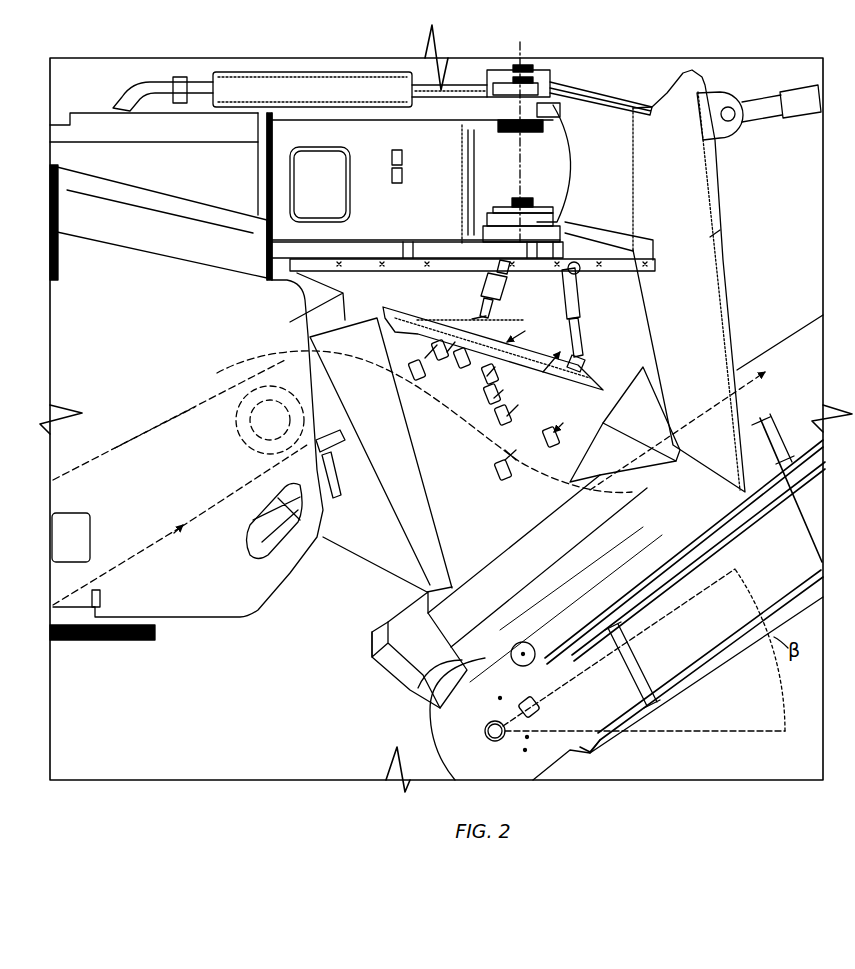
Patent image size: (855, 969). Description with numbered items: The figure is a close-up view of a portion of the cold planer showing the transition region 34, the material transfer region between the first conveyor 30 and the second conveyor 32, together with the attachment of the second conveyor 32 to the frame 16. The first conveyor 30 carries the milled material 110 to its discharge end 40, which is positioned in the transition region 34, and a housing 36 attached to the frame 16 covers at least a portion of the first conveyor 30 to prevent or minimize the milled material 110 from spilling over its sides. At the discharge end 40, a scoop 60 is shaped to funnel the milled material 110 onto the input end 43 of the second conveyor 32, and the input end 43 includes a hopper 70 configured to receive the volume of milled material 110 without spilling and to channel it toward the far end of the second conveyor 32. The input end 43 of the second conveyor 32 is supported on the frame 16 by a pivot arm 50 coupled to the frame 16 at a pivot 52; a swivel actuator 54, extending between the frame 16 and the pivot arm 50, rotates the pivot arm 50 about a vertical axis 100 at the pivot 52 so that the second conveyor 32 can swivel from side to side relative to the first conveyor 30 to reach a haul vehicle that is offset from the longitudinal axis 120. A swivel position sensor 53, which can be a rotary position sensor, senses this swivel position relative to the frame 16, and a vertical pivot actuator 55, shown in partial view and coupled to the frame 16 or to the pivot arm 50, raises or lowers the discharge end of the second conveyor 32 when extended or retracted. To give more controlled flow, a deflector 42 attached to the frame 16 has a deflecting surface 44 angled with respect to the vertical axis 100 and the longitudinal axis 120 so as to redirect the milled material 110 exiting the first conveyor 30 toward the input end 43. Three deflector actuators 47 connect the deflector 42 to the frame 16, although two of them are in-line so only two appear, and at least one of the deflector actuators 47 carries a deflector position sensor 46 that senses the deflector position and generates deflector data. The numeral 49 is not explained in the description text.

The frame 16 is at (198, 183).
The first conveyor 30 is at (183, 530).
The second conveyor 32 is at (797, 322).
The transition region 34 is at (450, 456).
The housing 36 is at (188, 346).
The discharge end 40 is at (312, 456).
The deflector 42 is at (560, 355).
The input end 43 is at (378, 672).
The deflecting surface 44 is at (543, 372).
The deflector position sensor 46 is at (572, 292).
The deflector actuators 47 is at (486, 288).
The rotor axis line 49 is at (168, 420).
The pivot arm 50 is at (703, 318).
The pivot 52 is at (530, 70).
The swivel position sensor 53 is at (493, 74).
The swivel actuator 54 is at (320, 87).
The vertical pivot actuator 55 is at (750, 97).
The scoop 60 is at (373, 543).
The hopper 70 is at (422, 680).
The vertical axis 100 is at (520, 44).
The milled material 110 is at (270, 353).
The longitudinal axis 120 is at (430, 315).